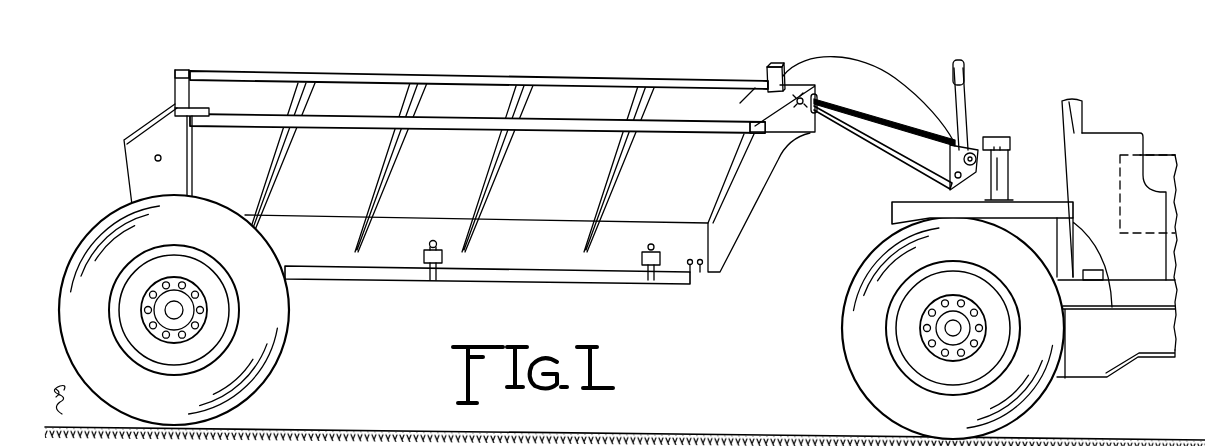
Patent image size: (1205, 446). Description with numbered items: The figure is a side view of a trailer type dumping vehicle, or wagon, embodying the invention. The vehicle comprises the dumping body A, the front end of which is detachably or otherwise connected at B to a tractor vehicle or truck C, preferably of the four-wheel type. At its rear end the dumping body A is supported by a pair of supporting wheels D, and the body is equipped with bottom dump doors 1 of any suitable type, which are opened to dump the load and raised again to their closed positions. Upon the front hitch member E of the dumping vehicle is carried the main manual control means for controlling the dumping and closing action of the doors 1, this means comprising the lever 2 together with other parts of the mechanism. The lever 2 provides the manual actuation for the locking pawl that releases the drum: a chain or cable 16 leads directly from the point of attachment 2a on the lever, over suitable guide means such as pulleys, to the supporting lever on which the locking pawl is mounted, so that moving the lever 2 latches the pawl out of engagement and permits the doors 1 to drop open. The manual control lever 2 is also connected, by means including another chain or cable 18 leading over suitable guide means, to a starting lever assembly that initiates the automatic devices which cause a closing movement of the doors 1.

The dumping body A is at (710, 183).
The bottom dump doors 1 is at (582, 277).
The supporting wheels D is at (263, 320).
The chain or cable 16 is at (852, 111).
The chain or cable 18 is at (836, 128).
The front hitch member E is at (887, 101).
The point of attachment 2a is at (950, 137).
The lever 2 is at (968, 114).
The connection B is at (1005, 163).
The tractor vehicle or truck C is at (930, 203).